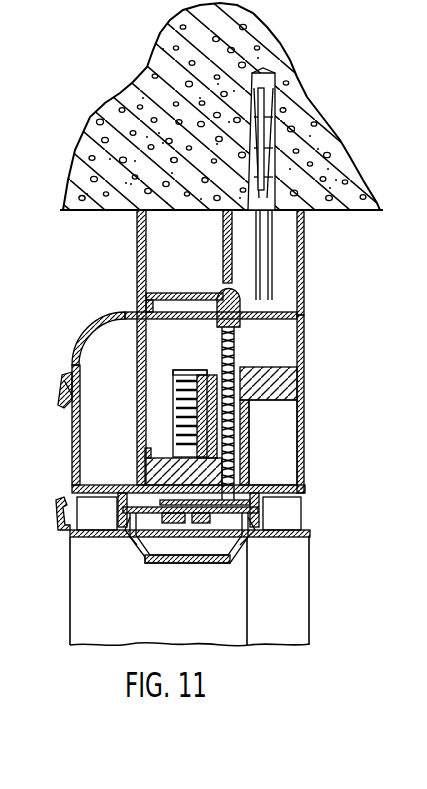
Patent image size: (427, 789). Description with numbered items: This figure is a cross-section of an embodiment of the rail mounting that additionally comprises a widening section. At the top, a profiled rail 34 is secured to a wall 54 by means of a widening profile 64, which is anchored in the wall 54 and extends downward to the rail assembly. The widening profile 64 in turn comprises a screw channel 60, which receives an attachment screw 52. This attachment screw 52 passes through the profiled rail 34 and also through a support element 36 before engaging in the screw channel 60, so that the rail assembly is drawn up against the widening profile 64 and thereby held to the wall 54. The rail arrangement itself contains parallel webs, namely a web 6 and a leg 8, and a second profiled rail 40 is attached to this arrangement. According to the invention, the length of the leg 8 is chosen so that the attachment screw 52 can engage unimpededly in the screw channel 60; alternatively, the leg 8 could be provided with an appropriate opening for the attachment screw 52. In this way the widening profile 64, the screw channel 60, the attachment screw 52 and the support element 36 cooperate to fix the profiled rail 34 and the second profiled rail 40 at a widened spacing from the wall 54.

The wall 54 is at (303, 110).
The web 6 is at (137, 285).
The widening profile 64 is at (304, 270).
The profiled rail 34 is at (103, 362).
The screw channel 60 is at (241, 301).
The second profiled rail 40 is at (304, 345).
The leg 8 is at (290, 378).
The support element 36 is at (292, 396).
The attachment screw 52 is at (237, 478).